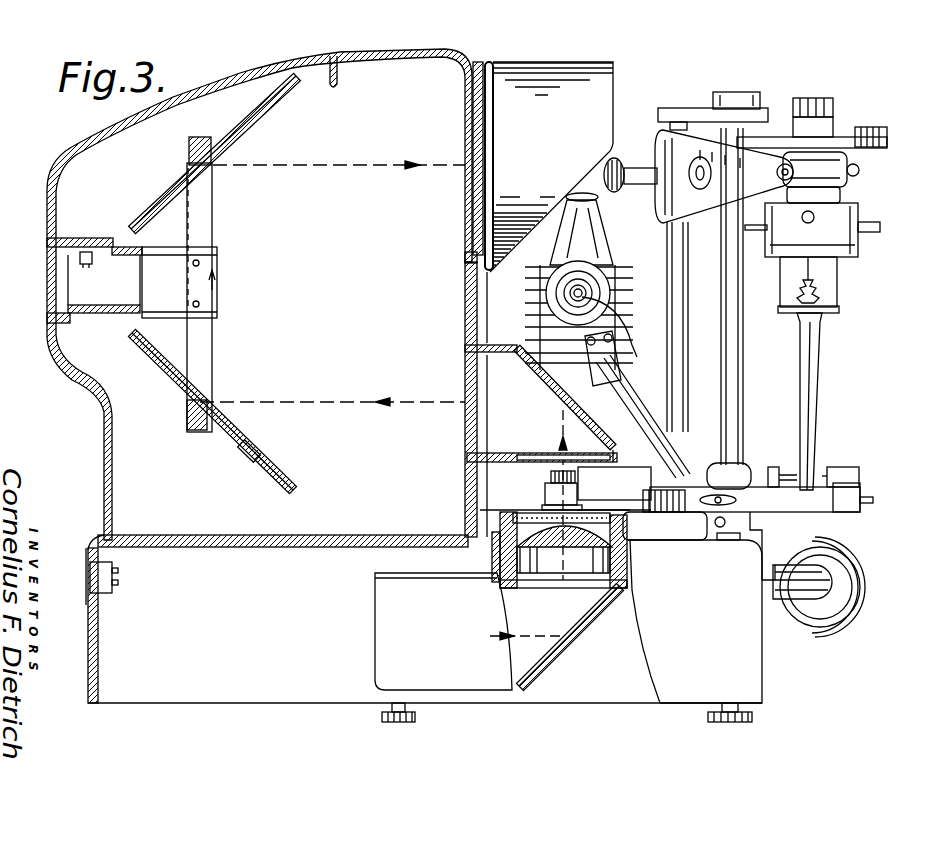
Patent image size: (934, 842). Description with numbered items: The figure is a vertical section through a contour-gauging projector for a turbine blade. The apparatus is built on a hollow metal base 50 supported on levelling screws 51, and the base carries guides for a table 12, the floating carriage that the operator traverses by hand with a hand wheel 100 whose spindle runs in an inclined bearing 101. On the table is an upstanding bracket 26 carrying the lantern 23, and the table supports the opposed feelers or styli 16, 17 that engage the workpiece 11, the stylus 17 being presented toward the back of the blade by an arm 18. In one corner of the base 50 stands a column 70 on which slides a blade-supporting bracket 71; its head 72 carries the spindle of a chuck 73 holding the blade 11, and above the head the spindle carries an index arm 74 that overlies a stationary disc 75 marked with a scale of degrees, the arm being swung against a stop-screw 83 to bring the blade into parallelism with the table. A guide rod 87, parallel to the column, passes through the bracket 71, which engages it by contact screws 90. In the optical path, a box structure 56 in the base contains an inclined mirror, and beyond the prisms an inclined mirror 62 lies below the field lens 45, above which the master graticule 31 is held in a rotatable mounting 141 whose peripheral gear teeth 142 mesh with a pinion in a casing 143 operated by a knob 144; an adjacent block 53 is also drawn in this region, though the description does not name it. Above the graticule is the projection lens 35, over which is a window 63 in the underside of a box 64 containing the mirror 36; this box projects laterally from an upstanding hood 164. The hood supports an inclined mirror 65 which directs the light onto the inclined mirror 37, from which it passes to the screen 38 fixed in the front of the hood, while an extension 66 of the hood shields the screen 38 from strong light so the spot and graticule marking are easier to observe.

The workpiece 11 is at (820, 363).
The table 12 is at (770, 497).
The stylus 16 is at (795, 470).
The stylus 17 is at (830, 477).
The arm 18 is at (840, 495).
The lantern 23 is at (625, 277).
The upstanding bracket 26 is at (650, 417).
The master graticule 31 is at (467, 507).
The projection lens 35 is at (550, 478).
The mirror 36 is at (527, 372).
The inclined mirror 37 is at (210, 153).
The screen 38 is at (475, 138).
The field lens 45 is at (550, 548).
The base 50 is at (90, 658).
The levelling screws 51 is at (387, 712).
The lens mount block 53 is at (613, 490).
The box structure 56 is at (387, 647).
The inclined mirror 62 is at (577, 641).
The window 63 is at (547, 453).
The box 64 is at (500, 343).
The inclined mirror 65 is at (183, 374).
The extension 66 is at (613, 67).
The column 70 is at (703, 362).
The blade-supporting bracket 71 is at (850, 163).
The head 72 is at (838, 192).
The chuck 73 is at (855, 208).
The index arm 74 is at (840, 137).
The stationary disc 75 is at (887, 145).
The stop-screw 83 is at (787, 130).
The guide rod 87 is at (740, 303).
The contact screws 90 is at (698, 177).
The hand wheel 100 is at (867, 581).
The inclined bearing 101 is at (820, 582).
The mounting 141 is at (497, 553).
The gear teeth 142 is at (482, 545).
The casing 143 is at (673, 528).
The knob 144 is at (670, 492).
The hood 164 is at (100, 465).